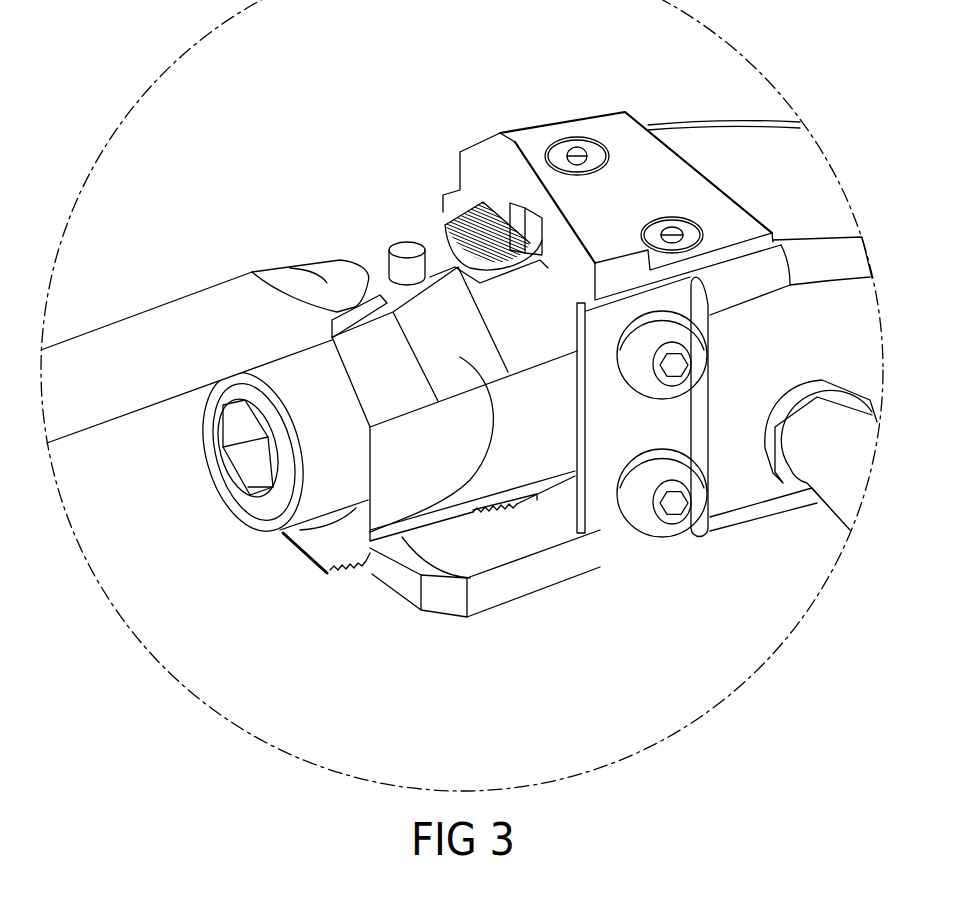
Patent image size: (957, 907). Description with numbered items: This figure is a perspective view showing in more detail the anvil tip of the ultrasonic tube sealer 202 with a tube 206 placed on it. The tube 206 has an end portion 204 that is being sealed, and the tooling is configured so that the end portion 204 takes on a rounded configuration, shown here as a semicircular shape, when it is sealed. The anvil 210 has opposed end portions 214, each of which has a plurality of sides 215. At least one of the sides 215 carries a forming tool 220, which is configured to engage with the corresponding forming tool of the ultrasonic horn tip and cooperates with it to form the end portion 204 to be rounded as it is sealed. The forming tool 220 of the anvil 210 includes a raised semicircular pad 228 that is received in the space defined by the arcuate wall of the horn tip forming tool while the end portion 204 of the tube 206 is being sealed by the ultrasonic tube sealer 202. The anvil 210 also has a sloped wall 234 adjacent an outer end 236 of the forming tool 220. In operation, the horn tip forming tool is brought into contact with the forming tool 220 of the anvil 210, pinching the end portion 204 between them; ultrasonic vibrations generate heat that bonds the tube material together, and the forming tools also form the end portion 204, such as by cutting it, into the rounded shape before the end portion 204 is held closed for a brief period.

The ultrasonic tube sealer 202 is at (315, 150).
The end portion 204 is at (300, 268).
The tube 206 is at (168, 317).
The anvil 210 is at (532, 442).
The opposed end portions 214 is at (380, 382).
The sides 215 is at (515, 500).
The forming tool 220 is at (440, 243).
The raised semicircular pad 228 is at (457, 197).
The sloped wall 234 is at (323, 566).
The outer end 236 is at (327, 283).